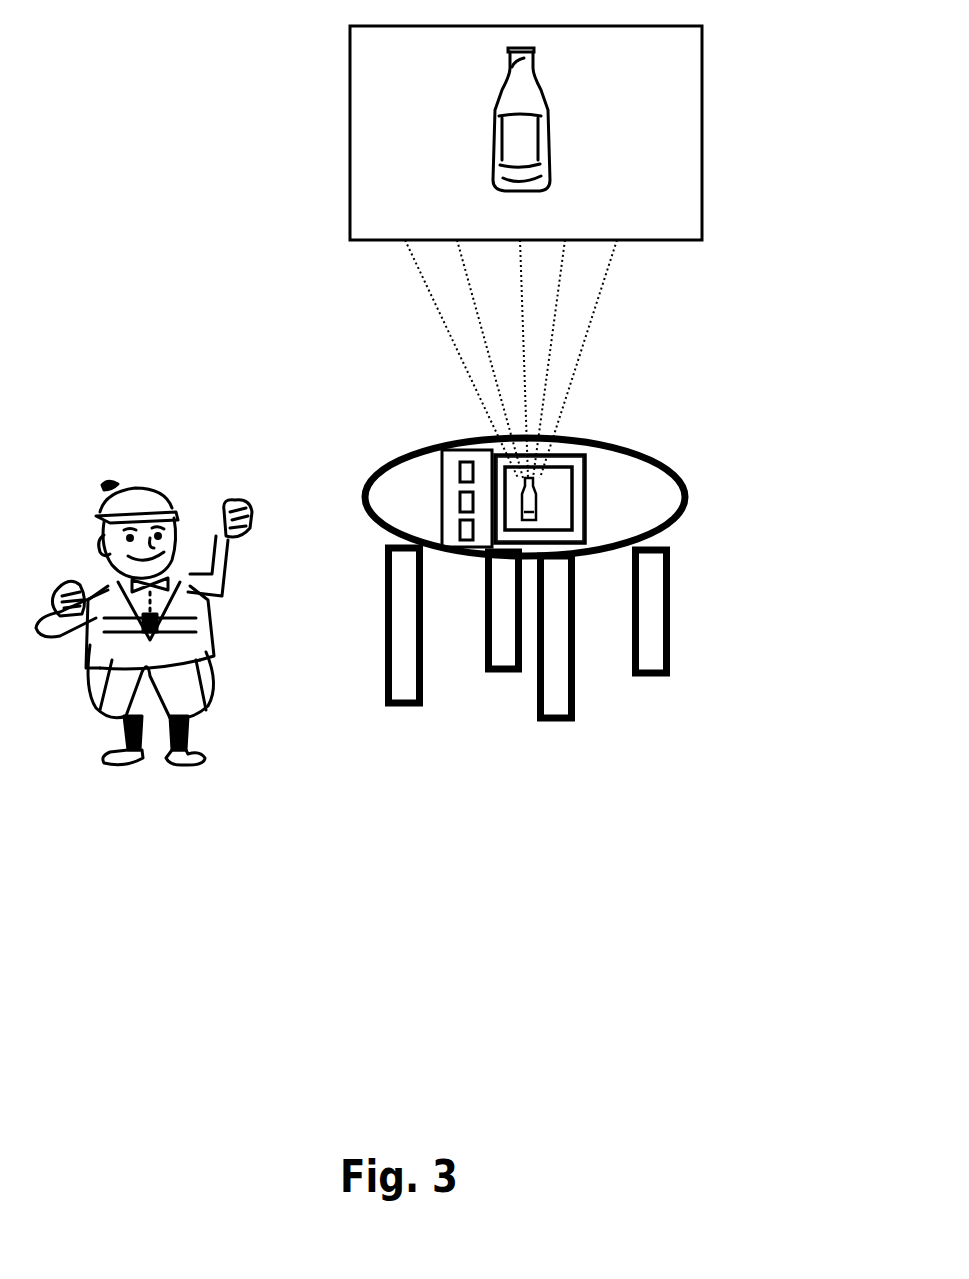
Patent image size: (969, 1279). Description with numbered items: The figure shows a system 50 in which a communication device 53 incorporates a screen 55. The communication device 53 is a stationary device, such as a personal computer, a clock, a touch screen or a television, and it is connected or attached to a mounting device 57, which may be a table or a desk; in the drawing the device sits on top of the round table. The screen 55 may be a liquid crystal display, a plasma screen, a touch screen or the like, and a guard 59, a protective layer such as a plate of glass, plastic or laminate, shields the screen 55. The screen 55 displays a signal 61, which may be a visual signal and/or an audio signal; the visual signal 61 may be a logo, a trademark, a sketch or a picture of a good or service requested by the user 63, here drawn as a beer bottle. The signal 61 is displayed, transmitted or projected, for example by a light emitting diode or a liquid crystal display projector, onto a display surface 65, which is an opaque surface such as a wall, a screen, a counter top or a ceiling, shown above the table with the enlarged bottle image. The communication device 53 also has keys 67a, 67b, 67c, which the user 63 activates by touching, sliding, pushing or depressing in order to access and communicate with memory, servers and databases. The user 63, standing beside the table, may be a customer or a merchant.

The system 50 is at (255, 793).
The communication device 53 is at (462, 441).
The screen 55 is at (562, 492).
The mounting device 57 is at (687, 505).
The guard 59 is at (578, 532).
The signal 61 is at (536, 514).
The user 63 is at (137, 480).
The display surface 65 is at (652, 129).
The key 67a is at (460, 465).
The key 67b is at (460, 497).
The key 67c is at (460, 530).